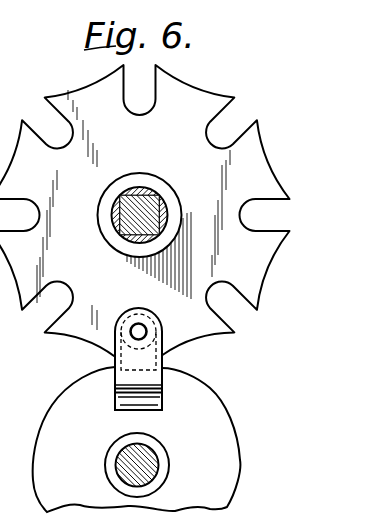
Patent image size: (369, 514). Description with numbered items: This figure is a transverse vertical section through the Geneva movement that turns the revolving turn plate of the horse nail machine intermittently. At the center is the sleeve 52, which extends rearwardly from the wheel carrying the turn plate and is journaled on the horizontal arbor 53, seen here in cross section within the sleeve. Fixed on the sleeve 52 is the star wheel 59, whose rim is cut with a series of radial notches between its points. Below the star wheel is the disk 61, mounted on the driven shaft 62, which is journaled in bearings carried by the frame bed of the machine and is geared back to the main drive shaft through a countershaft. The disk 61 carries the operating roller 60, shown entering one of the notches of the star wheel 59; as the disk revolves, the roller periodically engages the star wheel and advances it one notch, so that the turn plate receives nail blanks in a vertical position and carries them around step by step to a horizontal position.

The sleeve 52 is at (150, 191).
The horizontal arbor 53 is at (166, 220).
The star wheel 59 is at (145, 211).
The operating roller 60 is at (162, 332).
The disk 61 is at (163, 465).
The driven shaft 62 is at (158, 477).